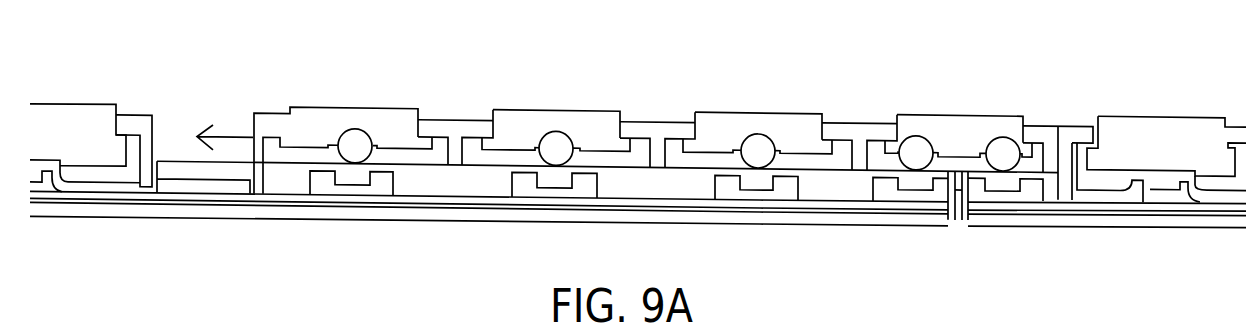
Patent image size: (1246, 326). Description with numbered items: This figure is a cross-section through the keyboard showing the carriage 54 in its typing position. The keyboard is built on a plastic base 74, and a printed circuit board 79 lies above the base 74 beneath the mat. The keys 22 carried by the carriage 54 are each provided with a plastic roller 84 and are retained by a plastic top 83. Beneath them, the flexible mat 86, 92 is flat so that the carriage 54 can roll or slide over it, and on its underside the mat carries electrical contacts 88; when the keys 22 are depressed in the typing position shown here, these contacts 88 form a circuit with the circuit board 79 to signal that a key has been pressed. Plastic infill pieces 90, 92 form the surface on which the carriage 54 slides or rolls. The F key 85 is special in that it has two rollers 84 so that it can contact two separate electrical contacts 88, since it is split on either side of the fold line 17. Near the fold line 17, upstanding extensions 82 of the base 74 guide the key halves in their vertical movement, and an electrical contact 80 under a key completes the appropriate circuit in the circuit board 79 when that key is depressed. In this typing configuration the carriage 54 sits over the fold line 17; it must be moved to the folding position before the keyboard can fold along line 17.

The fold line 17 is at (958, 205).
The keys 22 is at (713, 121).
The carriage 54 is at (350, 85).
The base 74 is at (822, 212).
The printed circuit board 79 is at (610, 203).
The electrical contact 80 is at (1160, 182).
The upstanding extensions 82 is at (950, 190).
The plastic top 83 is at (445, 120).
The plastic roller 84 is at (757, 142).
The F key 85 is at (958, 117).
The flexible mat 86 is at (638, 183).
The electrical contacts 88 is at (352, 178).
The plastic infill piece 90 is at (168, 170).
The plastic infill piece 92 is at (1050, 187).